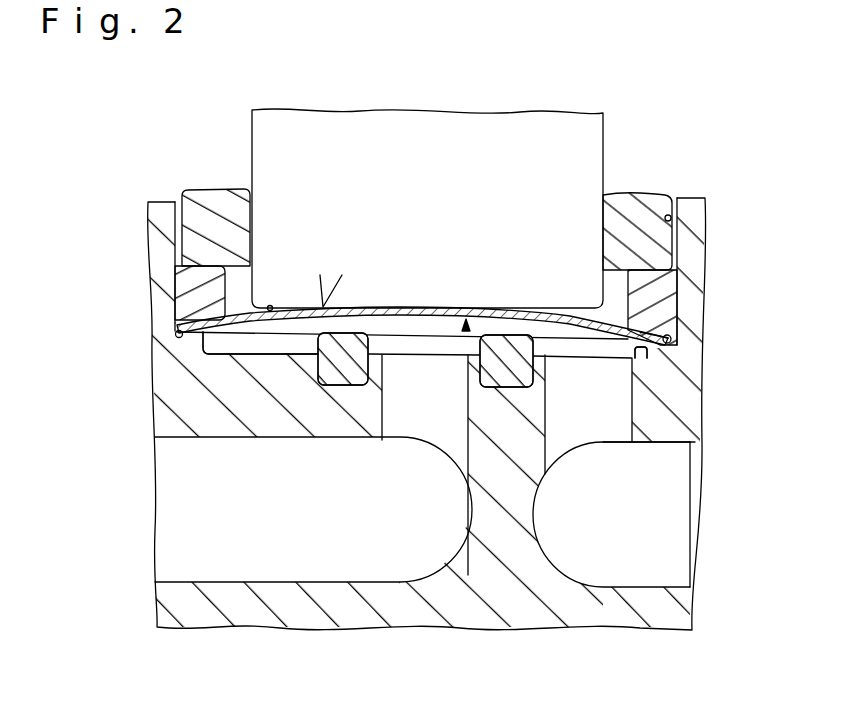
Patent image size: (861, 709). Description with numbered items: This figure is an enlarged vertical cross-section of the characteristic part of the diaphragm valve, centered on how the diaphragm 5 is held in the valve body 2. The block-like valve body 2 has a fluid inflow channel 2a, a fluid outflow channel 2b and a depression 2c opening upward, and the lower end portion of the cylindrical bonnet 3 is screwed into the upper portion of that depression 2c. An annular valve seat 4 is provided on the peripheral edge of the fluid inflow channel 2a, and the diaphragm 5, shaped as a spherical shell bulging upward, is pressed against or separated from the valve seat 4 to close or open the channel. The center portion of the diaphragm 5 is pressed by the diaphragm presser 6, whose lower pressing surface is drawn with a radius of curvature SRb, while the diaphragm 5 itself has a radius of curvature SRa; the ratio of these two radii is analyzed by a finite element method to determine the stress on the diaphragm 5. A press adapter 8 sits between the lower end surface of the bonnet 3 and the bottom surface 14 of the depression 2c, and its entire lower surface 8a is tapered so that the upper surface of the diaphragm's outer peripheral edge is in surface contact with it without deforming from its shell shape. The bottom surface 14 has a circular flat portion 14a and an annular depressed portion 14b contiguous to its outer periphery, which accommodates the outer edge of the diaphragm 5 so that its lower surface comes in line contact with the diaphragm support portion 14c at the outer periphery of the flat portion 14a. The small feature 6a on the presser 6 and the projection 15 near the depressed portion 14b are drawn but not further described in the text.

The valve body 2 is at (645, 610).
The fluid inflow channel 2a is at (382, 408).
The fluid outflow channel 2b is at (630, 412).
The depression 2c is at (671, 218).
The bonnet 3 is at (630, 203).
The valve seat 4 is at (347, 373).
The diaphragm 5 is at (697, 287).
The diaphragm presser 6 is at (570, 134).
The piston lower corner 6a is at (268, 304).
The press adapter 8 is at (182, 268).
The lower surface 8a is at (176, 337).
The bottom surface 14 is at (283, 353).
The flat portion 14a is at (248, 342).
The depressed portion 14b is at (678, 345).
The diaphragm support portion 14c is at (673, 320).
The projection 15 is at (648, 350).
The radius of curvature of the diaphragm SRa is at (466, 322).
The radius of curvature of the pressing surface of the diaphragm presser SRb is at (323, 307).